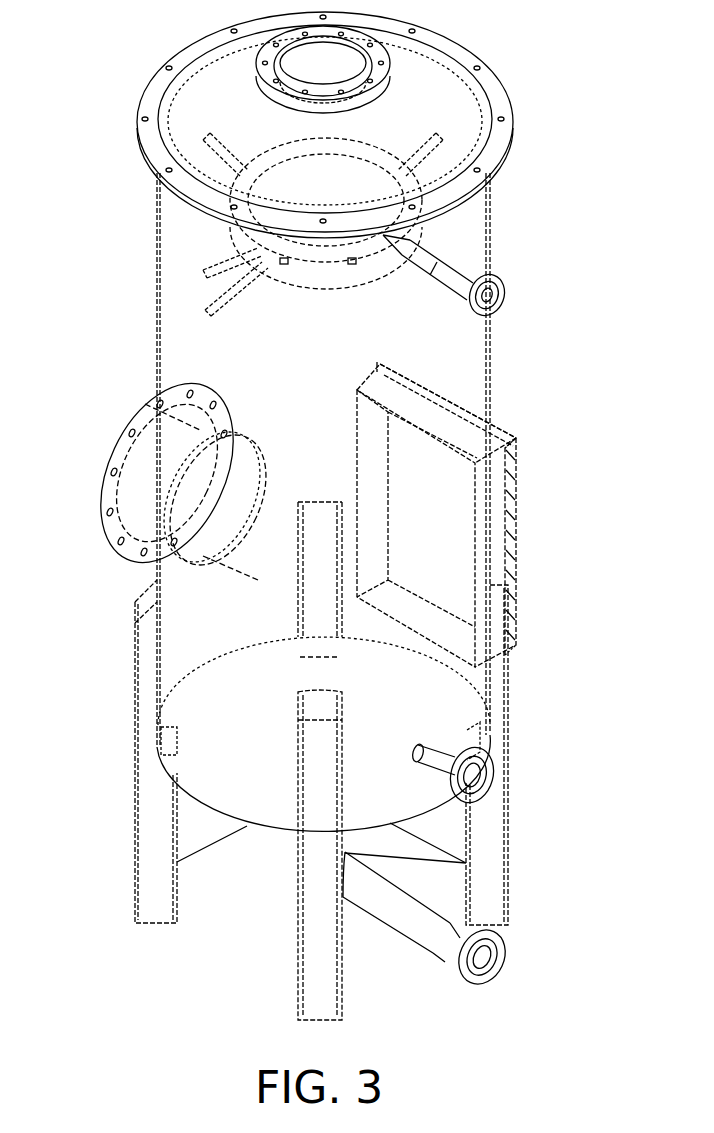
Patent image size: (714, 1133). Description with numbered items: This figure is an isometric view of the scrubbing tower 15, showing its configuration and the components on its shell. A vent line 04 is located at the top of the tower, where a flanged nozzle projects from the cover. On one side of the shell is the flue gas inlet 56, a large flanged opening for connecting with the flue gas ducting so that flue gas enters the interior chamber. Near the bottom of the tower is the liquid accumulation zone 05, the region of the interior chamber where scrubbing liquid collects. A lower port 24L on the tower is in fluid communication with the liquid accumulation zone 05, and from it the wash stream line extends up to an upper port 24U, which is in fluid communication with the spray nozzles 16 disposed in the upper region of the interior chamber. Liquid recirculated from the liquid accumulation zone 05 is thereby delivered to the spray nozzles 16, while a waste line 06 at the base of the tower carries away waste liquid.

The vent line 04 is at (258, 55).
The scrubbing tower 15 is at (490, 218).
The spray nozzles 16 is at (312, 253).
The upper port 24U is at (504, 289).
The flue gas inlet 56 is at (100, 535).
The liquid accumulation zone 05 is at (213, 768).
The lower port 24L is at (495, 764).
The waste line 06 is at (503, 955).